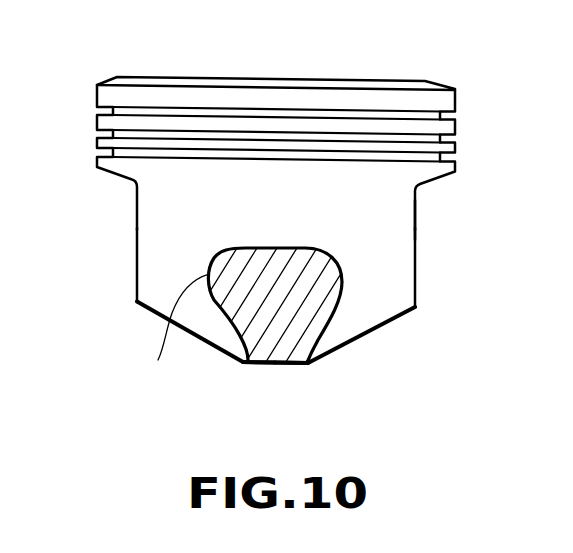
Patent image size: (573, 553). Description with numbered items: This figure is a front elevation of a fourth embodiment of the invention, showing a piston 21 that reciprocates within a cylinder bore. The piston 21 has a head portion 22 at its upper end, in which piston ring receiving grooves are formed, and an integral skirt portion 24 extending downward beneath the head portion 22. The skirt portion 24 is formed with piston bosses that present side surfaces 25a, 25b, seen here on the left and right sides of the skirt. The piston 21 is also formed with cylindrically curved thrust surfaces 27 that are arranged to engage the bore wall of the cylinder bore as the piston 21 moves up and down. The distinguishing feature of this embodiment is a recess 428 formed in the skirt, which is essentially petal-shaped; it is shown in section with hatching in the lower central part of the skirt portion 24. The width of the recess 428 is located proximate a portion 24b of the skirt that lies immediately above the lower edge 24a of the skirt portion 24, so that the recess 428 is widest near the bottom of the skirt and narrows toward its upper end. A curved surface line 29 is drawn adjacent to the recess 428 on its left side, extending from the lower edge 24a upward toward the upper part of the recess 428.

The piston 21 is at (113, 208).
The head portion 22 is at (361, 100).
The skirt portion 24 is at (162, 290).
The lower edge of the skirt 24a is at (268, 365).
The portion of the skirt 24b is at (314, 346).
The side surface of piston boss 25a is at (137, 257).
The side surface of piston boss 25b is at (417, 260).
The thrust surface 27 is at (302, 217).
The cavity surface line 29 is at (158, 360).
The recess 428 is at (297, 302).